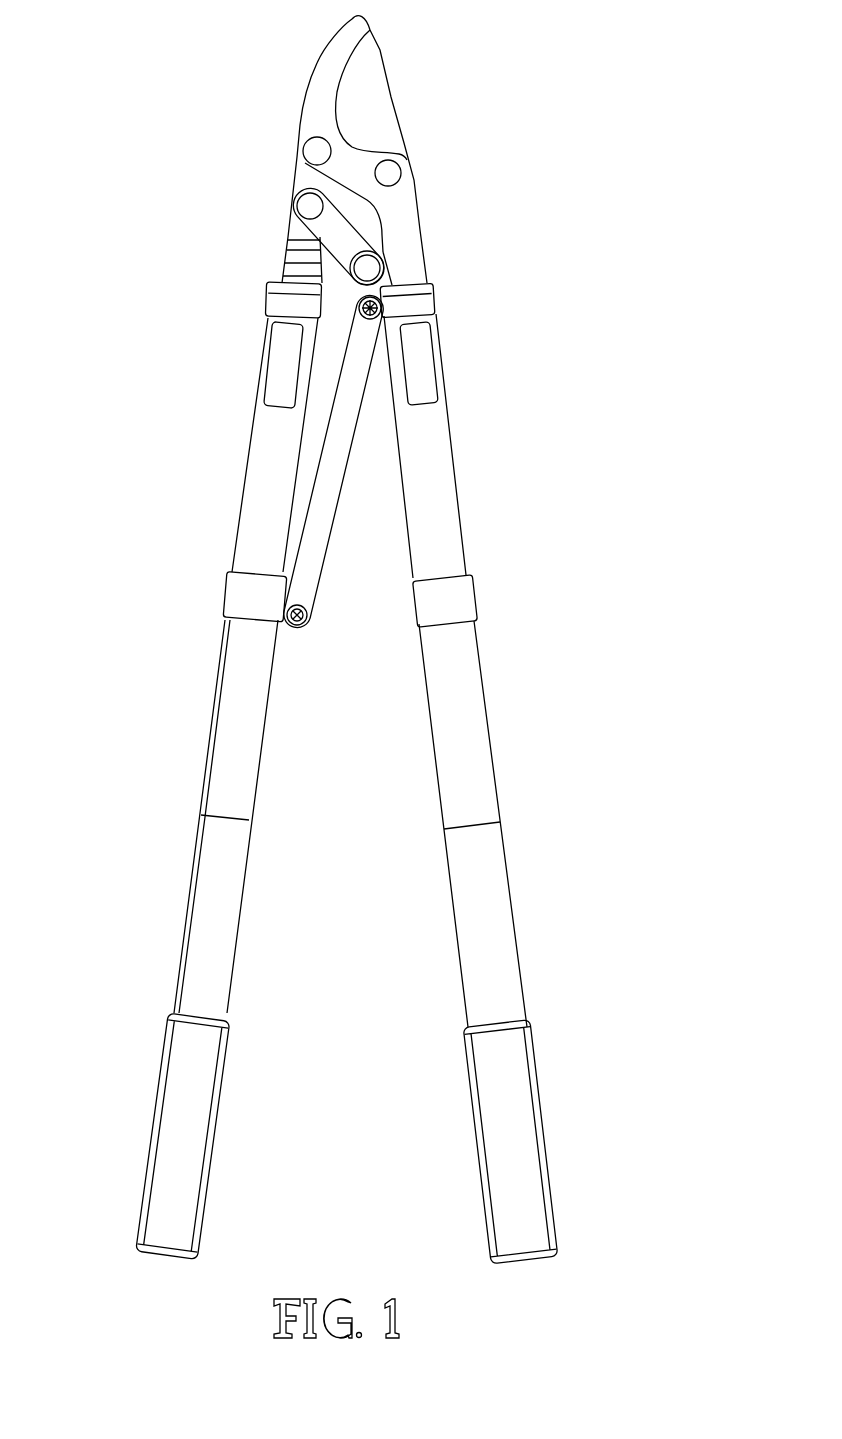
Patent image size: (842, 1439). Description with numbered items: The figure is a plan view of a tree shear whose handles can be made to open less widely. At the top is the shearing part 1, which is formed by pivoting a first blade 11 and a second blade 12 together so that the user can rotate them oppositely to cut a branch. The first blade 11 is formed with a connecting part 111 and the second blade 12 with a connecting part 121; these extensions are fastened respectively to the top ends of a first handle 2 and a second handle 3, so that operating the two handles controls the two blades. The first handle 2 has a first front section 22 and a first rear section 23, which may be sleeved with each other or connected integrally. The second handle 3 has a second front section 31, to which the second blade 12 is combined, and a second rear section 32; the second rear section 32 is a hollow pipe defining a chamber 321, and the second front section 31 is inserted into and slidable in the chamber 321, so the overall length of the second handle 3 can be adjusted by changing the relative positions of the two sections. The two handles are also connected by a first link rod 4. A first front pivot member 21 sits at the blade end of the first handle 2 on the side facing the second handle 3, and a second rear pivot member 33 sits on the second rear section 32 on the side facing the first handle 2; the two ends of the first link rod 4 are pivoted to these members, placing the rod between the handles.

The shearing part 1 is at (278, 80).
The first blade 11 is at (407, 197).
The second blade 12 is at (373, 103).
The connecting part 111 is at (433, 328).
The connecting part 121 is at (268, 360).
The first handle 2 is at (558, 498).
The first front pivot member 21 is at (383, 275).
The first front section 22 is at (462, 532).
The first rear section 23 is at (482, 675).
The second handle 3 is at (85, 495).
The second front section 31 is at (253, 528).
The second rear section 32 is at (213, 705).
The chamber 321 is at (197, 944).
The second rear pivot member 33 is at (288, 633).
The first link rod 4 is at (333, 482).